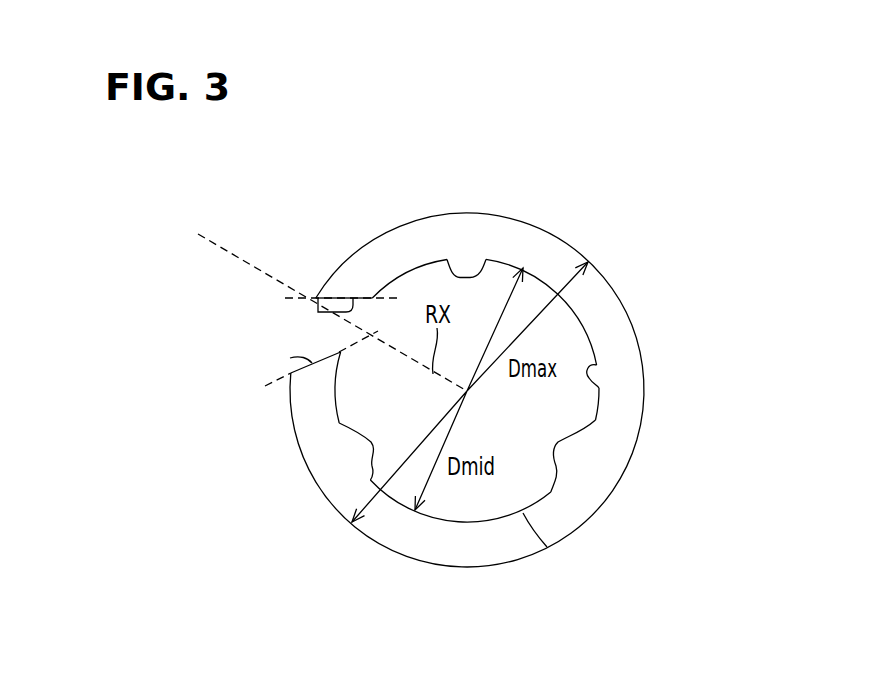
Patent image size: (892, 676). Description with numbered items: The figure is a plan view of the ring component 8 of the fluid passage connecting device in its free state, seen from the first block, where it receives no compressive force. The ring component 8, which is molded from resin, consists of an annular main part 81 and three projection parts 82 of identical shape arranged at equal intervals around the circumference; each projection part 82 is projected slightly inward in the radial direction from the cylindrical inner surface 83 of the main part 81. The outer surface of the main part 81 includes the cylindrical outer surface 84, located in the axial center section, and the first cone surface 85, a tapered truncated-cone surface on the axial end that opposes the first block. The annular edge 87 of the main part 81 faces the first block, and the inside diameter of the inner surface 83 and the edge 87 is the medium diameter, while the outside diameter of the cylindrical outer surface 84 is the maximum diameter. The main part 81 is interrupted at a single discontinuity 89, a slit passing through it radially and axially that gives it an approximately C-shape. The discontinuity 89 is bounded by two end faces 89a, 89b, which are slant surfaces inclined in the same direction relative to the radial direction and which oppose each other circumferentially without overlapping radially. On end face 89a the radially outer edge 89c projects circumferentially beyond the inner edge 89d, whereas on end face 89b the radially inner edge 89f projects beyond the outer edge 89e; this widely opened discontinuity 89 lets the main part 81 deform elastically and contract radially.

The ring component 8 is at (612, 240).
The main part 81 is at (603, 330).
The projection part 82 is at (473, 268).
The inner surface 83 is at (618, 375).
The cylindrical outer surface 84 is at (643, 411).
The first cone surface 85 is at (612, 438).
The edge 87 is at (547, 548).
The discontinuity 89 is at (320, 330).
The end face 89a is at (330, 313).
The end face 89b is at (290, 358).
The edge 89c is at (318, 298).
The edge 89d is at (366, 298).
The edge 89e is at (265, 388).
The edge 89f is at (289, 375).